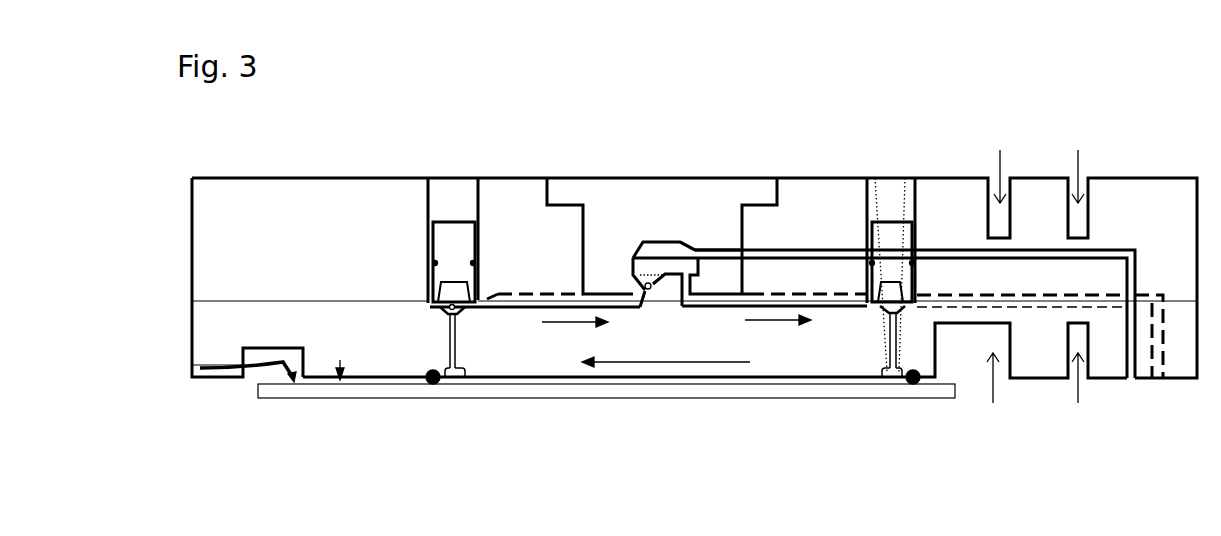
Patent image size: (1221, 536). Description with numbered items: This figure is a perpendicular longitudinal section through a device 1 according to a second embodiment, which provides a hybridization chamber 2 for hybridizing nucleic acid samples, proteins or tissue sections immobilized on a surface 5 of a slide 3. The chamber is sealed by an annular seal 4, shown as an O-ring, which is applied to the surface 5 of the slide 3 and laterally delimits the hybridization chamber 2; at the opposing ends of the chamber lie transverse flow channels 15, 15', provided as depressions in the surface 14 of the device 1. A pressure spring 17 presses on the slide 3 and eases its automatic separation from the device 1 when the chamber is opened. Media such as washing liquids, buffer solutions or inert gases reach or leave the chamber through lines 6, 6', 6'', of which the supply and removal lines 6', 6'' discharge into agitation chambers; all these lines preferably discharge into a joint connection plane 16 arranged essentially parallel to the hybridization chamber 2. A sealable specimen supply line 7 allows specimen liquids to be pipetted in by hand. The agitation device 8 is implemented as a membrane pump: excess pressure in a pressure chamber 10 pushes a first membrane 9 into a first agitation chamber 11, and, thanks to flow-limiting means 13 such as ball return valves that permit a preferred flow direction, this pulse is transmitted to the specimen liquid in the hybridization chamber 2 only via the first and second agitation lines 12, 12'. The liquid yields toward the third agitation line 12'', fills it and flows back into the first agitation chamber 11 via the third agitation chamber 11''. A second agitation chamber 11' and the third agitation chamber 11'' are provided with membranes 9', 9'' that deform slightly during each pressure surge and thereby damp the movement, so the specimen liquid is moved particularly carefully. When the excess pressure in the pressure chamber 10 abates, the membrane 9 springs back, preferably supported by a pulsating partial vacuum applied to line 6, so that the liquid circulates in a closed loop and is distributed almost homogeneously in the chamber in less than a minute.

The device 1 is at (243, 241).
The hybridization chamber 2 is at (577, 383).
The slide 3 is at (717, 392).
The seal 4 is at (428, 384).
The surface 5 is at (340, 366).
The line 6 is at (936, 299).
The supply and/or removal line 6' is at (535, 260).
The supply and/or removal line 6'' is at (956, 336).
The specimen supply line 7 is at (880, 180).
The agitation device 8 is at (629, 217).
The first membrane 9 is at (654, 239).
The membrane 9' is at (913, 262).
The membrane 9'' is at (472, 261).
The pressure chamber 10 is at (673, 247).
The first agitation chamber 11 is at (672, 270).
The second agitation chamber 11' is at (860, 326).
The third agitation chamber 11'' is at (483, 326).
The first agitation line 12 is at (648, 394).
The second agitation line 12' is at (832, 397).
The third agitation line 12'' is at (512, 398).
The flow-limiting means 13 is at (652, 290).
The surface 14 is at (644, 388).
The transverse flow channel 15 is at (873, 425).
The transverse flow channel 15' is at (469, 424).
The joint connection plane 16 is at (1134, 388).
The pressure spring 17 is at (252, 371).